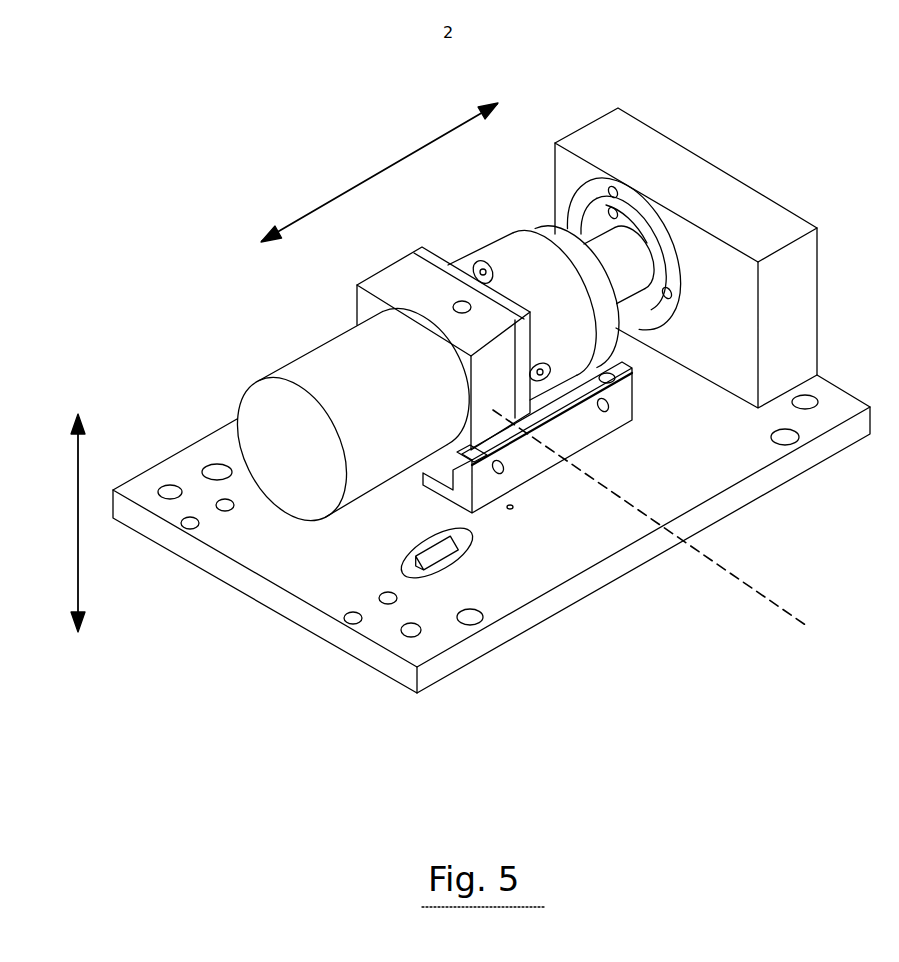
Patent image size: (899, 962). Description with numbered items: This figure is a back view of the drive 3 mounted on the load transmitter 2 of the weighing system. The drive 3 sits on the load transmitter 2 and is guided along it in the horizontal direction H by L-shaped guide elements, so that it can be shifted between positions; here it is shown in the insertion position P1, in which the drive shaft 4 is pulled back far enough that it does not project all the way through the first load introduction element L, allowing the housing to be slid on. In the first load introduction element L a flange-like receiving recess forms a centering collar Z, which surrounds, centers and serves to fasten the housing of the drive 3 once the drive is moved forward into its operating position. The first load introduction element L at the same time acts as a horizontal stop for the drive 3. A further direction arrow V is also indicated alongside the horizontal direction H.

The load transmitter 2 is at (452, 657).
The drive 3 is at (299, 317).
The drive shaft 4 is at (608, 248).
The centering collar Z is at (642, 318).
The first load introduction element L is at (748, 203).
The horizontal direction H is at (379, 172).
The vertical direction V is at (60, 523).
The insertion position P1 is at (769, 599).